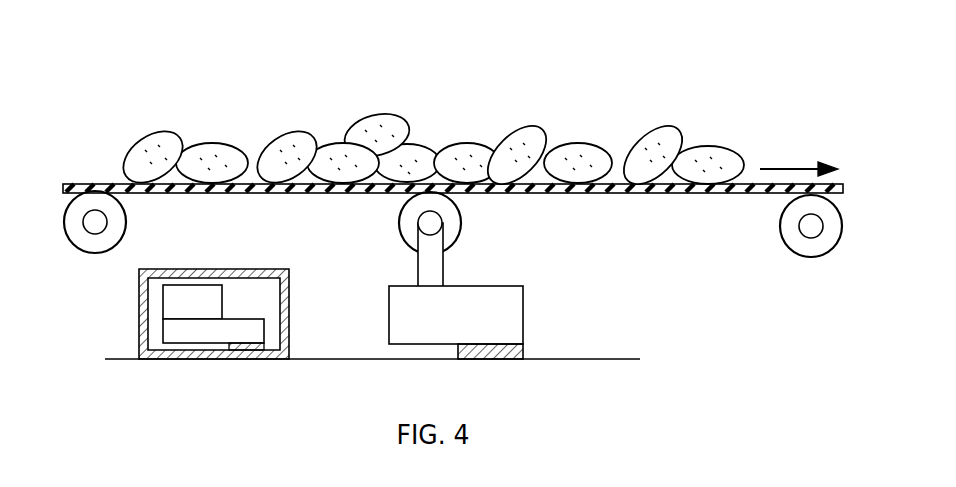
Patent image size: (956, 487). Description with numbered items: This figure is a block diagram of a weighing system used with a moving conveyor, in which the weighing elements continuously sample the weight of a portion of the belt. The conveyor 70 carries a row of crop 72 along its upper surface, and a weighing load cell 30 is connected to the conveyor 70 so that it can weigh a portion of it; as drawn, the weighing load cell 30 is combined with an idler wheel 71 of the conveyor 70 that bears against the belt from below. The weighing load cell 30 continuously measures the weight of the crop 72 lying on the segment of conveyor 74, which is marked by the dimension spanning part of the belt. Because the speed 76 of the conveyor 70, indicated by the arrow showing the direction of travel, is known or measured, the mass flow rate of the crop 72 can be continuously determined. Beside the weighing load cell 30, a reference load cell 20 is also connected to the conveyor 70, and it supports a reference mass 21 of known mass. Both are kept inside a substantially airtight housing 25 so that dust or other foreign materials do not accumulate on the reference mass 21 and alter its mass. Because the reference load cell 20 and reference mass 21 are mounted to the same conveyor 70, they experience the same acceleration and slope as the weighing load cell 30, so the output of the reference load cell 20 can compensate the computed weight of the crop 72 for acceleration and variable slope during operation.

The reference load cell 20 is at (257, 333).
The reference mass 21 is at (163, 303).
The housing 25 is at (139, 281).
The weighing load cell 30 is at (497, 287).
The conveyor 70 is at (95, 183).
The idler wheel 71 is at (400, 215).
The crop 72 is at (293, 143).
The segment of conveyor 74 is at (613, 183).
The speed of conveyor 76 is at (793, 167).